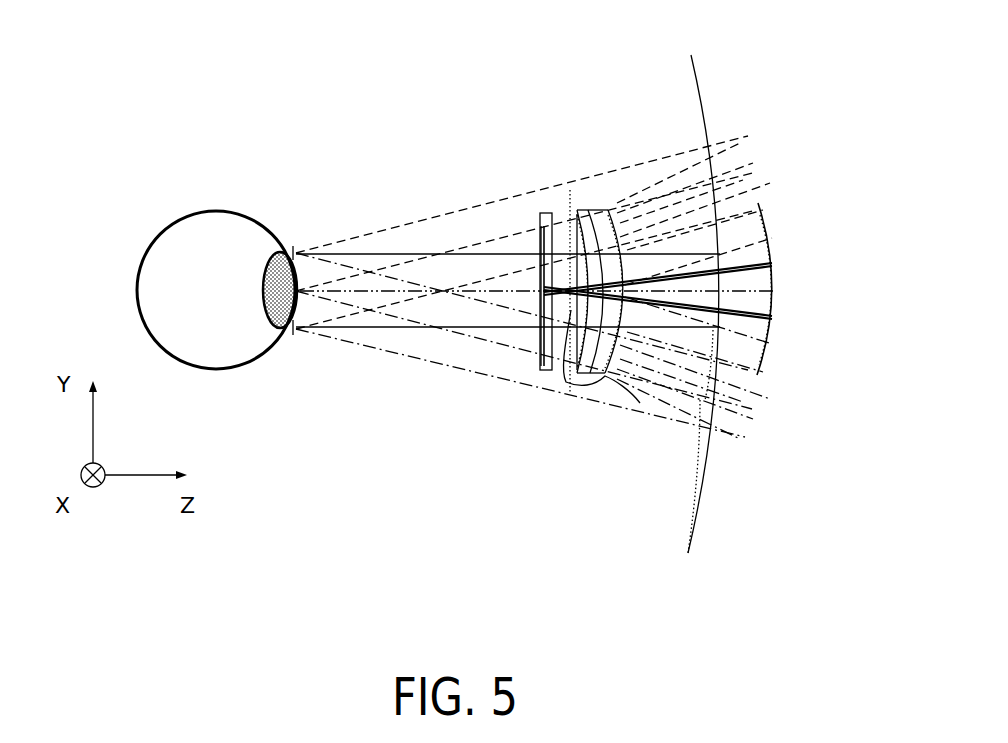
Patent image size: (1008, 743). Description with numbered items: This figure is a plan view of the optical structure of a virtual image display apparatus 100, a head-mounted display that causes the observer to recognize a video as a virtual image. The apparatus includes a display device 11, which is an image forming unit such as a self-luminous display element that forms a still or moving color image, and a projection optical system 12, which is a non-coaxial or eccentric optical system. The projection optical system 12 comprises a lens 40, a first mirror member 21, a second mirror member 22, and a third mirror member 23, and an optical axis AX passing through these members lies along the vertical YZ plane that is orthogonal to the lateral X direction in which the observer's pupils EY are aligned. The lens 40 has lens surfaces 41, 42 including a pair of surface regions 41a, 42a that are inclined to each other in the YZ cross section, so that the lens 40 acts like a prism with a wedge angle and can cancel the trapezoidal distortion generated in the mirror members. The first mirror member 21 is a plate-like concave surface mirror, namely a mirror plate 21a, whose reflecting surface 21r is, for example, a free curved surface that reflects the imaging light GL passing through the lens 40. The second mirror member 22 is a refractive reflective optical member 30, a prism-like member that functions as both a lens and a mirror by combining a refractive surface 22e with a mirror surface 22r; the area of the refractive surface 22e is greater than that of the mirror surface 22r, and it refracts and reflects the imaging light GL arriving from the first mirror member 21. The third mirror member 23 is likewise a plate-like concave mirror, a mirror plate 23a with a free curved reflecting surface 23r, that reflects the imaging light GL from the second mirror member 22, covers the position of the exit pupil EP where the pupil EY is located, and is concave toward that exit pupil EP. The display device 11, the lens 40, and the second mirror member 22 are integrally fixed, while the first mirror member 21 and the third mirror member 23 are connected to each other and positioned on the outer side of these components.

The virtual image display apparatus 100 is at (352, 100).
The projection optical system 12 is at (740, 93).
The display device 11 is at (540, 213).
The second mirror member 22 is at (558, 345).
The refractive reflective optical member 30 is at (560, 383).
The refractive surface 22e is at (603, 208).
The mirror surface 22r is at (540, 352).
The lens 40 is at (613, 315).
The lens surface 41 is at (602, 382).
The lens surface 42 is at (640, 403).
The surface region 41a is at (568, 228).
The surface region 42a is at (640, 226).
The first mirror member 21 is at (812, 240).
The mirror plate 21a is at (758, 203).
The reflecting surface 21r is at (766, 318).
The third mirror member 23 is at (704, 508).
The mirror plate 23a is at (688, 568).
The reflecting surface 23r is at (712, 402).
The pupil EY is at (273, 250).
The exit pupil EP is at (287, 333).
The optical axis AX is at (343, 293).
The imaging light GL is at (420, 220).